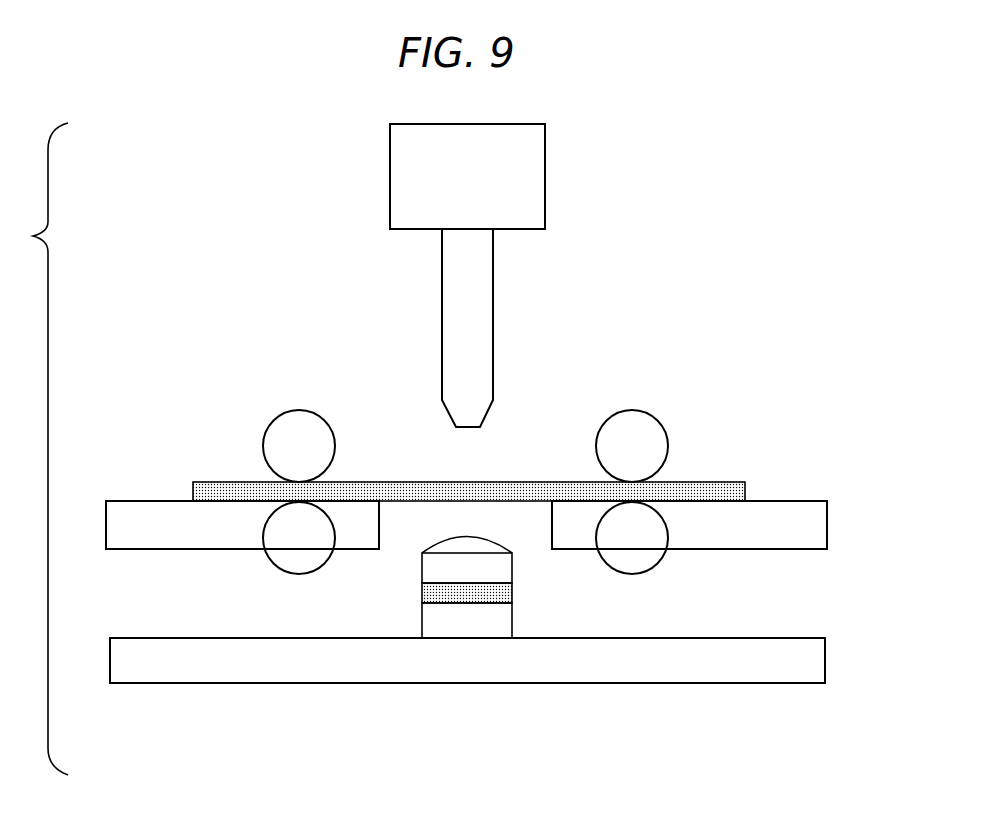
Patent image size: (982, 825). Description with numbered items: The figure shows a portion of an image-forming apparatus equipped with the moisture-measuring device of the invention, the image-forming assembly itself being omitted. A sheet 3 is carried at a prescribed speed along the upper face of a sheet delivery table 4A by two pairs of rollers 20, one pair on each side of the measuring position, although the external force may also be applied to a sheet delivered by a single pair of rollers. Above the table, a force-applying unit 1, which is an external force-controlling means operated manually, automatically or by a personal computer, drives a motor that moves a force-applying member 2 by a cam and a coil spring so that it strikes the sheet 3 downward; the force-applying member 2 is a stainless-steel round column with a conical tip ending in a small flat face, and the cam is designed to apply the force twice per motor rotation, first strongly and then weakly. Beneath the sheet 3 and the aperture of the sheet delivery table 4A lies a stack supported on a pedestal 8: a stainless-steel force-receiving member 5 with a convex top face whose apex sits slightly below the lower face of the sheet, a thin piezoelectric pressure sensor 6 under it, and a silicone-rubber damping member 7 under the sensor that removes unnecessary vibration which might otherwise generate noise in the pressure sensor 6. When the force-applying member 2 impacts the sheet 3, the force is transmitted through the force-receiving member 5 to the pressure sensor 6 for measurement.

The force-applying unit 1 is at (533, 170).
The force-applying member 2 is at (482, 310).
The sheet 3 is at (740, 483).
The sheet delivery table 4A is at (815, 521).
The force-receiving member 5 is at (428, 571).
The pressure sensor 6 is at (505, 593).
The damping member 7 is at (482, 626).
The pedestal 8 is at (358, 674).
The rollers 20 is at (290, 426).